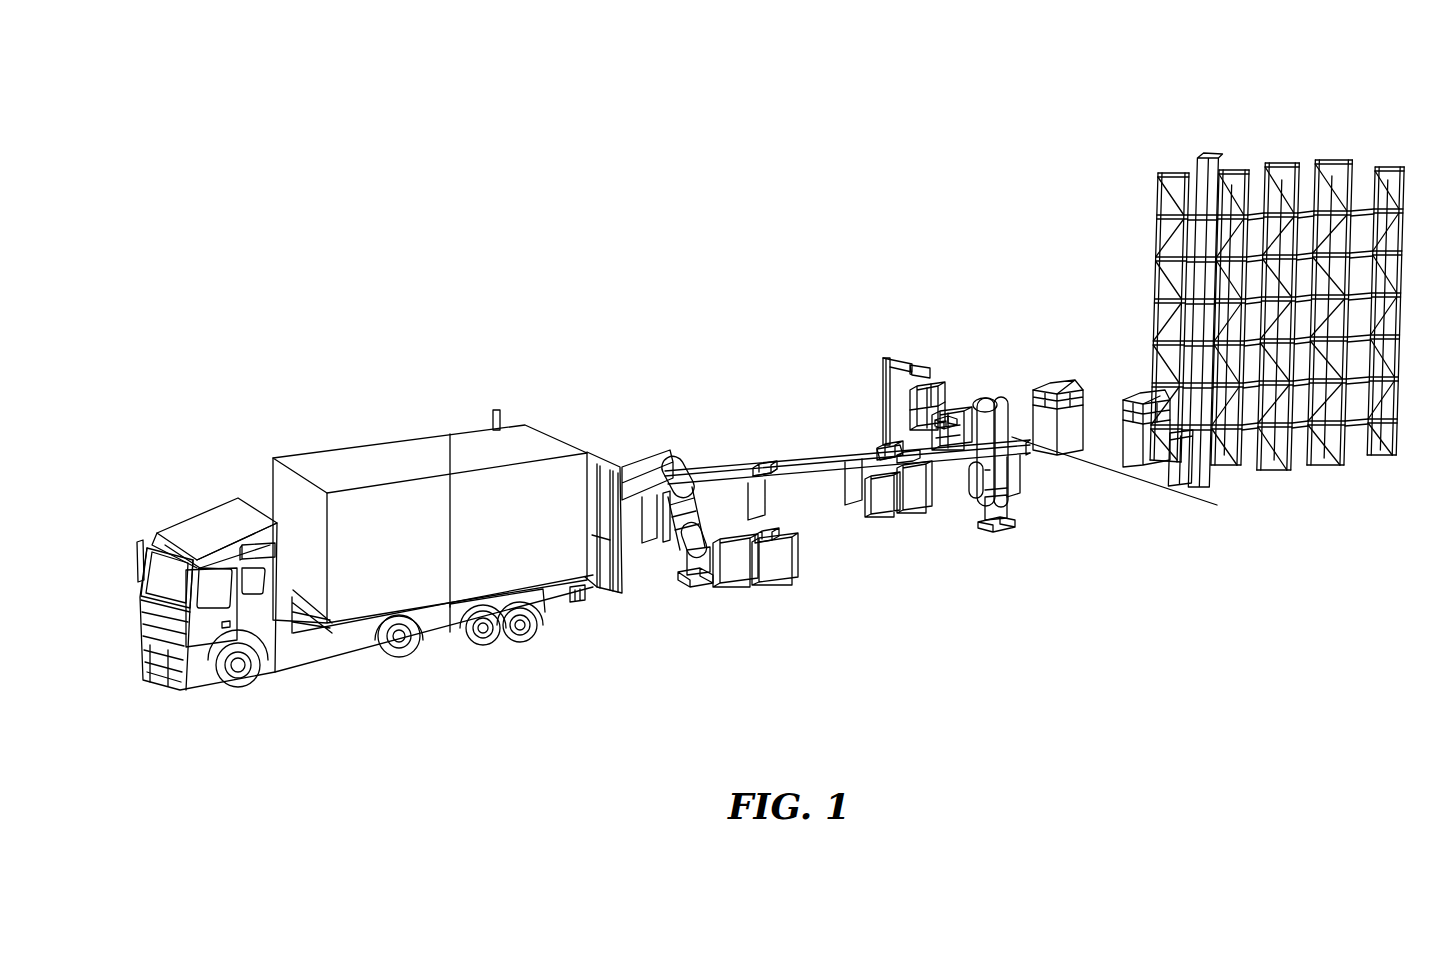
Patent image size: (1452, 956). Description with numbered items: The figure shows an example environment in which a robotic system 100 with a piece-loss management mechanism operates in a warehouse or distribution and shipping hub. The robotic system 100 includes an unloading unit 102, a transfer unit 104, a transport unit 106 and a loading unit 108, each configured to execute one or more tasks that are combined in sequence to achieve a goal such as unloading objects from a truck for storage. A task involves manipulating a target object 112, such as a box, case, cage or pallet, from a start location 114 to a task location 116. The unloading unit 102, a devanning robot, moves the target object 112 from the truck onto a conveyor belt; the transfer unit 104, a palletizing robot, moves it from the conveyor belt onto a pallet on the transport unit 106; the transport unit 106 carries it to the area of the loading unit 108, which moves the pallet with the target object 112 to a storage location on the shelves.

The robotic system 100 is at (868, 97).
The unloading unit 102 is at (663, 457).
The transfer unit 104 is at (945, 330).
The transport unit 106 is at (1037, 412).
The loading unit 108 is at (1190, 460).
The target object 112 is at (940, 418).
The start location 114 is at (917, 447).
The task location 116 is at (943, 432).